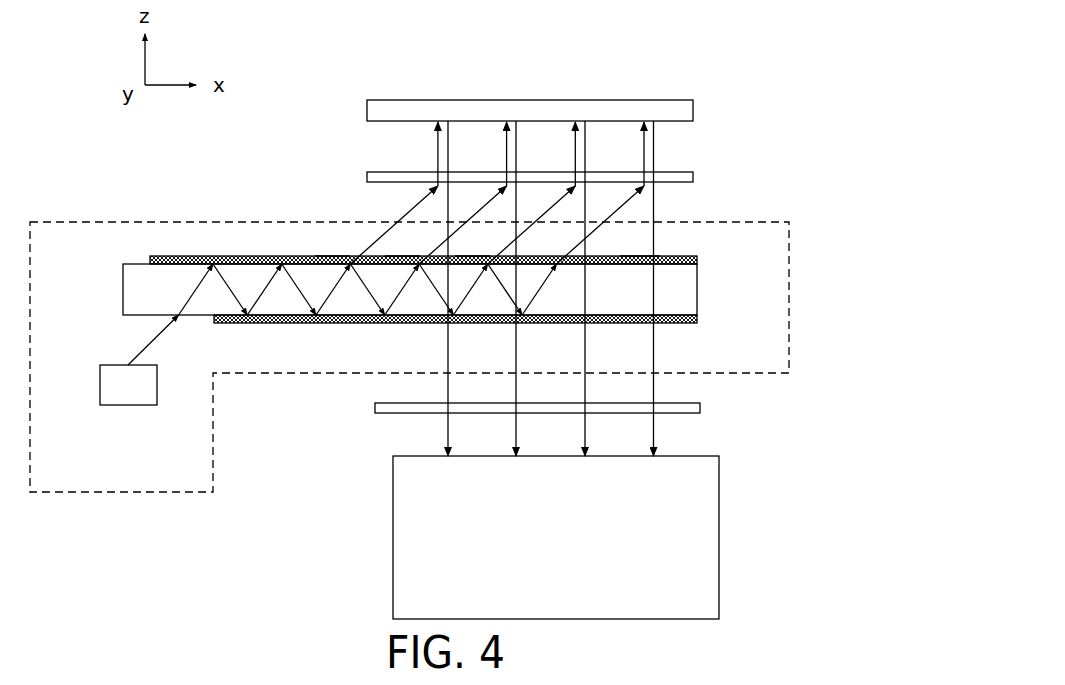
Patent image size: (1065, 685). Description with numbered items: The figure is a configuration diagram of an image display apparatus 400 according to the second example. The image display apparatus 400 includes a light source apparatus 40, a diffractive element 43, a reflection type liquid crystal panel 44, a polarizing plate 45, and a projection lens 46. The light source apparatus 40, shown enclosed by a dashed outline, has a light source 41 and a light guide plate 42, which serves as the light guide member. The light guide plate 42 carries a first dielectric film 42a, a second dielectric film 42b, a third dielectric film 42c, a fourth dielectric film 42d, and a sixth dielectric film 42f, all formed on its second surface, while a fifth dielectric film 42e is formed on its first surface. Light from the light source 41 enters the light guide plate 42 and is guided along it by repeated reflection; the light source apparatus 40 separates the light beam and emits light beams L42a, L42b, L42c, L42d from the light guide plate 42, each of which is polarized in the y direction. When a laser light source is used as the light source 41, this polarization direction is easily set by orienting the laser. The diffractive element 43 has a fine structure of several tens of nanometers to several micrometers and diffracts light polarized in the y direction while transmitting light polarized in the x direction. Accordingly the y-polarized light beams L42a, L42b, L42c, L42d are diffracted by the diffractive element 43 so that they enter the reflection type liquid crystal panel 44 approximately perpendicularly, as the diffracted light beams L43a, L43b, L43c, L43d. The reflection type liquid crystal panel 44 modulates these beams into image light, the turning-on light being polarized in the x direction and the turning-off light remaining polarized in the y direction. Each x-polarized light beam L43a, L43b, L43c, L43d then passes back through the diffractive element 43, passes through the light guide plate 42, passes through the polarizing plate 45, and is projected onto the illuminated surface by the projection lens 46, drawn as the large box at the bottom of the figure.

The image display apparatus 400 is at (818, 28).
The light source apparatus 40 is at (90, 222).
The light source 41 is at (136, 405).
The light guide plate 42 is at (123, 295).
The first dielectric film 42a is at (333, 257).
The second dielectric film 42b is at (392, 256).
The third dielectric film 42c is at (488, 248).
The fourth dielectric film 42d is at (647, 253).
The fifth dielectric film 42e is at (283, 323).
The sixth dielectric film 42f is at (204, 257).
The diffractive element 43 is at (693, 177).
The reflection type liquid crystal panel 44 is at (693, 106).
The polarizing plate 45 is at (700, 408).
The projection lens 46 is at (719, 522).
The light beam L42a is at (424, 196).
The light beam L42b is at (493, 198).
The light beam L42c is at (623, 198).
The light beam L42d is at (620, 207).
The diffracted light beam L43a is at (411, 154).
The diffracted light beam L43b is at (479, 154).
The diffracted light beam L43c is at (548, 154).
The diffracted light beam L43d is at (617, 154).